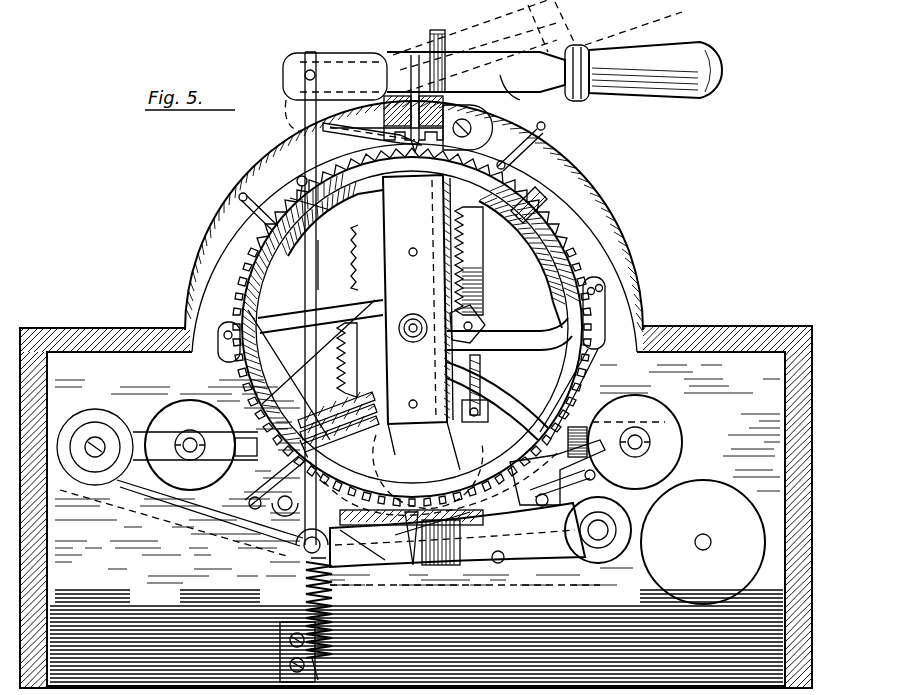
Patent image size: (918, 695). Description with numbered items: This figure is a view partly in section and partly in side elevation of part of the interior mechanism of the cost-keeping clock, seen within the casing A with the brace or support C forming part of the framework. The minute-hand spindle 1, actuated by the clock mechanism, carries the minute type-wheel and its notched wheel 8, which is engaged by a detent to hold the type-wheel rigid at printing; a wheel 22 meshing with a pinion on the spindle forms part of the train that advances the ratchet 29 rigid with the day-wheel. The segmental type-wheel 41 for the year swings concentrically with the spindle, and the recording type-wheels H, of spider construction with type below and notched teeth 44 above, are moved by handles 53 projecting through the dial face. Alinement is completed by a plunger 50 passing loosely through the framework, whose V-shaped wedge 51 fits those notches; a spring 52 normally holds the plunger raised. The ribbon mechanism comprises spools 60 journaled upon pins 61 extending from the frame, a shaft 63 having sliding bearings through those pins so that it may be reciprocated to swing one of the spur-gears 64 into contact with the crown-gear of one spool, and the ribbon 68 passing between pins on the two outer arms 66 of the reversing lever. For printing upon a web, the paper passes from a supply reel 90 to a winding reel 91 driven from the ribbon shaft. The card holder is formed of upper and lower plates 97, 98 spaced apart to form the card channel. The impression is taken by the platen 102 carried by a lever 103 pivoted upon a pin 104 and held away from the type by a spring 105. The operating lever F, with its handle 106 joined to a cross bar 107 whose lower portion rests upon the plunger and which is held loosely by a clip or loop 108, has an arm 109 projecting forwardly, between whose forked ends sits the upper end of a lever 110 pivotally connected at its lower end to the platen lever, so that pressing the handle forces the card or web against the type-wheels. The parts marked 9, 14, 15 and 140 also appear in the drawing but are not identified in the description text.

The casing A is at (748, 346).
The brace or support C is at (412, 309).
The operating lever F is at (534, 57).
The recording type-wheels H is at (483, 473).
The minute-hand spindle 1 is at (415, 345).
The notched wheel 8 is at (501, 200).
The cam plate 9 is at (440, 428).
The pawl 14 is at (478, 386).
The pawl pivot 15 is at (482, 402).
The wheel 22 is at (470, 262).
The ratchet 29 is at (472, 300).
The segmental type-wheel 41 is at (232, 350).
The notched teeth 44 is at (290, 198).
The plunger 50 is at (396, 96).
The V-shaped wedge 51 is at (417, 158).
The spring 52 is at (330, 138).
The handles 53 is at (300, 182).
The spools 60 is at (200, 410).
The pins 61 is at (184, 440).
The shaft 63 is at (137, 417).
The spur-gears 64 is at (583, 427).
The outer arms 66 is at (262, 505).
The ribbon 68 is at (252, 500).
The supply reel 90 is at (700, 598).
The winding reel 91 is at (93, 478).
The upper plate 97 is at (470, 506).
The lower plate 98 is at (560, 525).
The platen 102 is at (413, 567).
The lever 103 is at (450, 567).
The pin 104 is at (600, 545).
The spring 105 is at (334, 612).
The handle 106 is at (662, 56).
The cross bar 107 is at (413, 56).
The clip or loop 108 is at (458, 20).
The arm 109 is at (300, 72).
The lever 110 is at (330, 258).
The bracket plate 140 is at (598, 300).